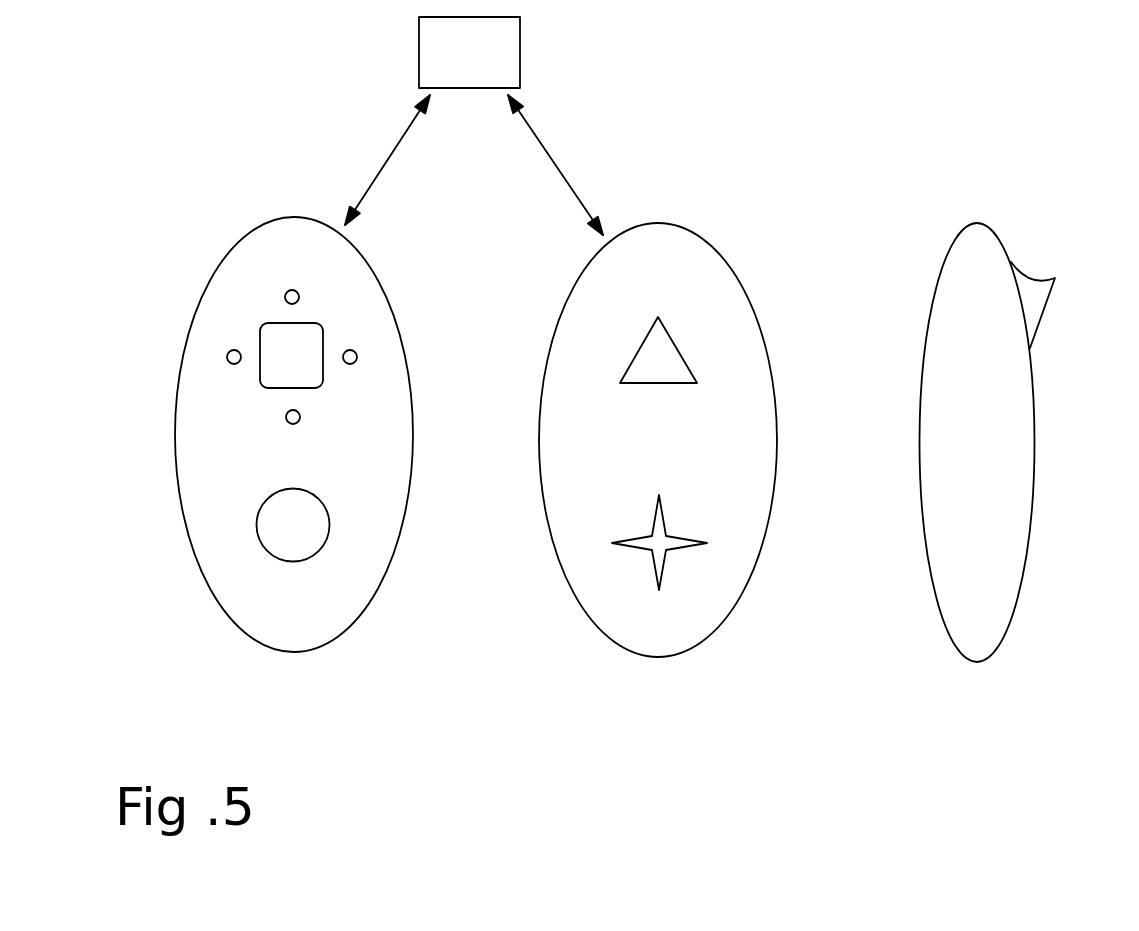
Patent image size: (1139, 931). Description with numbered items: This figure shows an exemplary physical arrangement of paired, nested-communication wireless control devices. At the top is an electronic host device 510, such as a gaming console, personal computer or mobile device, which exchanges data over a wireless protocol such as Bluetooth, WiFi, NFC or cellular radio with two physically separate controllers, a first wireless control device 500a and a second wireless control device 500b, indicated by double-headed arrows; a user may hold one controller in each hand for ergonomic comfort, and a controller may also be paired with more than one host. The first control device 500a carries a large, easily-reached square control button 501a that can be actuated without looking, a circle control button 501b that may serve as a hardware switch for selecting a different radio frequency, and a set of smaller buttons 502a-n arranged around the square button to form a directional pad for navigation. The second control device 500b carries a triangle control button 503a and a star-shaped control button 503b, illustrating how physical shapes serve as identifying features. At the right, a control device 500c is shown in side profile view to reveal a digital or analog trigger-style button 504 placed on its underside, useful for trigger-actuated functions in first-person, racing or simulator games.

The electronic host device 510 is at (520, 52).
The wireless control device 500a is at (275, 653).
The wireless control device 500b is at (640, 657).
The control device shown in side profile view 500c is at (976, 663).
The square control button 501a is at (324, 323).
The circle control button 501b is at (257, 538).
The buttons 502a-n is at (285, 294).
The triangle control button 503a is at (673, 343).
The star-shaped control button 503b is at (705, 543).
The trigger-style button 504 is at (1055, 278).